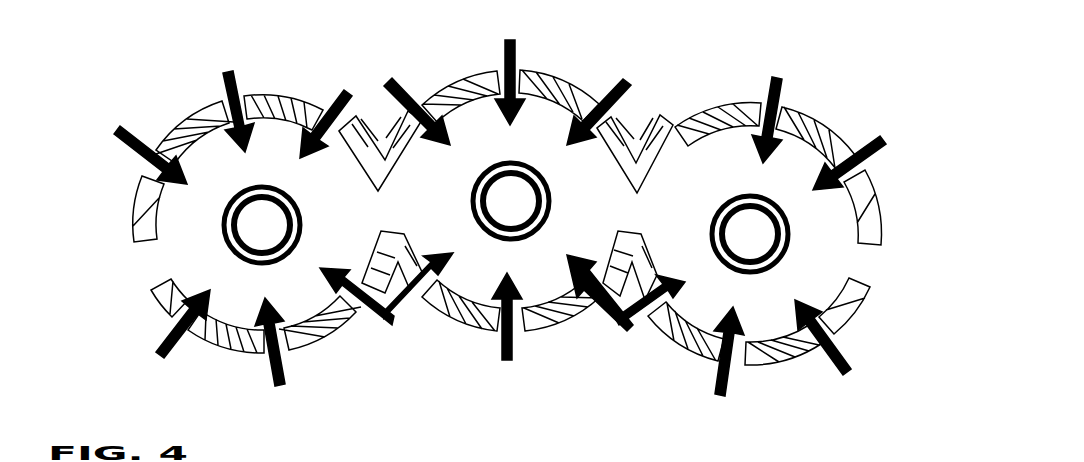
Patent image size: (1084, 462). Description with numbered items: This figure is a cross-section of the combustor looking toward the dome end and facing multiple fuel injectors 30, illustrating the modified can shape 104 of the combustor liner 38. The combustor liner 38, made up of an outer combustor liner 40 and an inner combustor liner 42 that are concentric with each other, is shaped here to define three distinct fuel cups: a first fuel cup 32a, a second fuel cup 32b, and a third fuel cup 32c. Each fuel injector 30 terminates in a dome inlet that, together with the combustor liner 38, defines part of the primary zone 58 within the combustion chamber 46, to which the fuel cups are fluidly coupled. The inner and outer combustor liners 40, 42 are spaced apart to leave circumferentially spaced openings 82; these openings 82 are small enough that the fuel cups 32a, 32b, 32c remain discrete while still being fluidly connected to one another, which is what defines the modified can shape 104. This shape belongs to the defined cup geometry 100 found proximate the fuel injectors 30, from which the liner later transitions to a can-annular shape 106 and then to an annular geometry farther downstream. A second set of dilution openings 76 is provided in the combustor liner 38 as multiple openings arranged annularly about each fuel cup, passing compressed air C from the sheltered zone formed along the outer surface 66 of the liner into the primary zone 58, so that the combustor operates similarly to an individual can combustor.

The fuel injector 30 is at (762, 248).
The first fuel cup 32a is at (349, 229).
The second fuel cup 32b is at (602, 215).
The third fuel cup 32c is at (830, 234).
The combustor liner 38 is at (325, 334).
The outer combustor liner 40 is at (570, 86).
The inner combustor liner 42 is at (768, 348).
The combustion chamber 46 is at (690, 228).
The primary zone 58 is at (455, 215).
The outer surface 66 is at (684, 327).
The second set of dilution openings 76 is at (785, 110).
The circumferentially spaced openings 82 is at (152, 265).
The defined cup geometry 100 is at (844, 116).
The modified can shape 104 is at (546, 56).
The can-annular shape 106 is at (610, 456).
The compressed air C is at (237, 100).